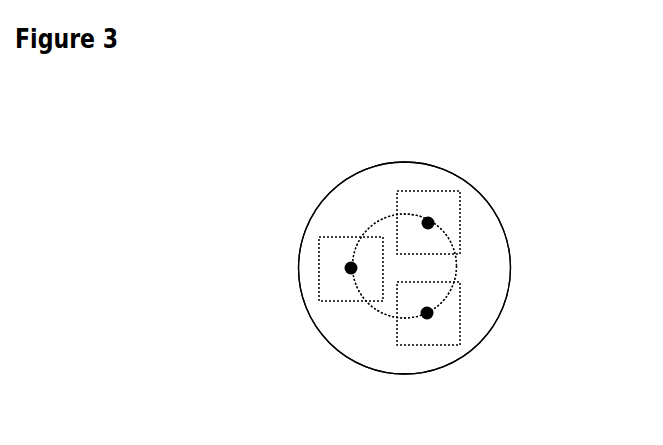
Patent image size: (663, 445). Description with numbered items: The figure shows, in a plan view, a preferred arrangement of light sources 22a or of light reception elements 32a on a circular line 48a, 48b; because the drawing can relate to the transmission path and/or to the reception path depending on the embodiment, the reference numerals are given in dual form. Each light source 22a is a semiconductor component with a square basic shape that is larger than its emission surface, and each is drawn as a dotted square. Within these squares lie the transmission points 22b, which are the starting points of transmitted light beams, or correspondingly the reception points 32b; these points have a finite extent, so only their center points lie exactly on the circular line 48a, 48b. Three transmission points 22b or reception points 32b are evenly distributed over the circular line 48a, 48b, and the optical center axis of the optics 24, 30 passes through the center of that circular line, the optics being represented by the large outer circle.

The light source 22a is at (332, 202).
The light reception element 32a is at (322, 225).
The transmission point 22b is at (261, 315).
The reception point 32b is at (341, 292).
The circular line 48a is at (466, 281).
The circular line 48b is at (489, 281).
The optics 24 is at (424, 298).
The optics 30 is at (442, 298).